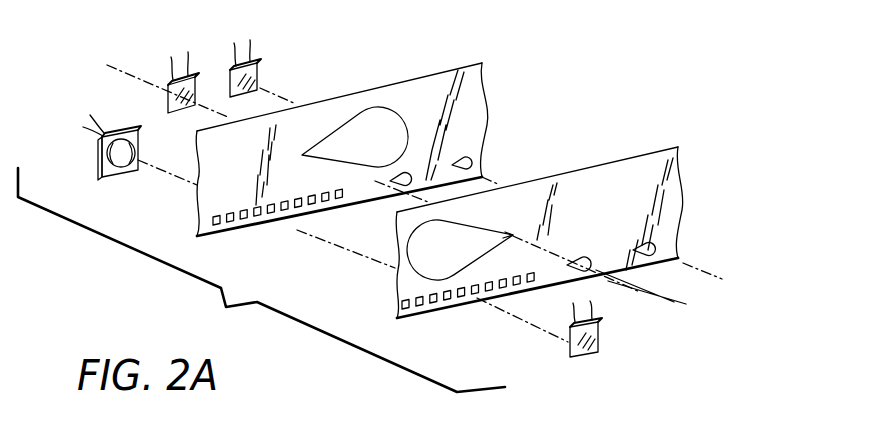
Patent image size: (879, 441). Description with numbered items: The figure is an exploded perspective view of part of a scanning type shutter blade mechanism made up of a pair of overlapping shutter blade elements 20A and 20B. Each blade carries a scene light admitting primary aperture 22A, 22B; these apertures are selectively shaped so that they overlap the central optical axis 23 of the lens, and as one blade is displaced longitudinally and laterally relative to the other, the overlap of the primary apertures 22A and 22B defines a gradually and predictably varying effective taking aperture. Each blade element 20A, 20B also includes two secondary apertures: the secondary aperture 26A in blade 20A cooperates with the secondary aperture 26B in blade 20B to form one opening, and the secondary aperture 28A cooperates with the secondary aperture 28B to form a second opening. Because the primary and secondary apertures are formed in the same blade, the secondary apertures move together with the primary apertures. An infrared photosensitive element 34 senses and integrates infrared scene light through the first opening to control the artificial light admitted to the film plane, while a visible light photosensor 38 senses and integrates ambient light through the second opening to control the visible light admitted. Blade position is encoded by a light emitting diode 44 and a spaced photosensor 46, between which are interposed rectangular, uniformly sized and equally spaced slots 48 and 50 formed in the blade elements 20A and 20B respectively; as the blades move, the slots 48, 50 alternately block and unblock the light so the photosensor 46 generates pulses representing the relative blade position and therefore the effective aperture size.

The shutter blade element 20A is at (597, 162).
The shutter blade element 20B is at (440, 70).
The primary aperture 22A is at (423, 265).
The primary aperture 22B is at (367, 130).
The central optical axis 23 is at (523, 233).
The secondary aperture 26A is at (587, 260).
The secondary aperture 26B is at (403, 190).
The secondary aperture 28A is at (643, 247).
The secondary aperture 28B is at (470, 163).
The infrared photosensitive element 34 is at (168, 85).
The visible light photosensor 38 is at (260, 70).
The light emitting diode 44 is at (128, 170).
The photosensor 46 is at (600, 338).
The slots 48 is at (420, 310).
The slots 50 is at (233, 232).